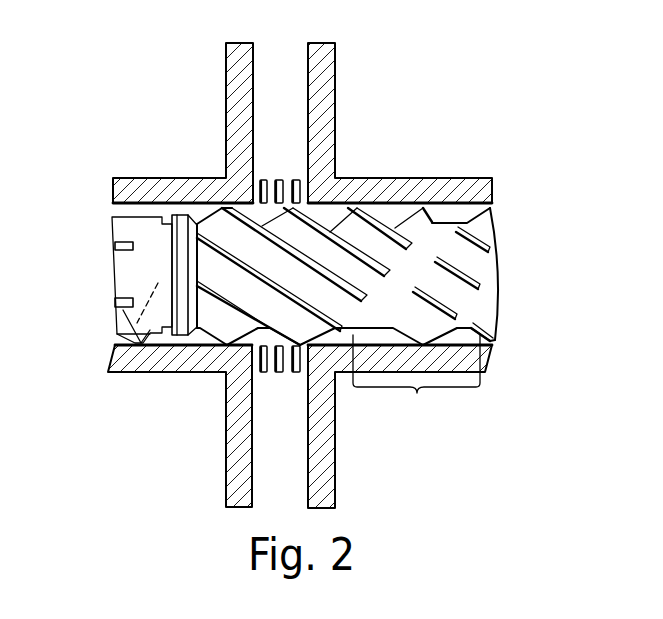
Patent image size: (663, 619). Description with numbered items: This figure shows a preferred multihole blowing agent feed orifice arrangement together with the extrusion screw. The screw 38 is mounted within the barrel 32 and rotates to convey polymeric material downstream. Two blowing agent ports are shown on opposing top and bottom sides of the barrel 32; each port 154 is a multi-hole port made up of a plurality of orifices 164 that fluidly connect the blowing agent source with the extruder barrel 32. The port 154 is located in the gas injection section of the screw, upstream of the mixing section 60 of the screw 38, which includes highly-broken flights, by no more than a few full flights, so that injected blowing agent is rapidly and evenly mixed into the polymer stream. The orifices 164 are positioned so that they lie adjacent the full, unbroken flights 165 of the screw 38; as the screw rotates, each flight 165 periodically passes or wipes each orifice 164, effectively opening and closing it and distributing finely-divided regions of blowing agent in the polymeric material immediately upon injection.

The barrel 32 is at (141, 363).
The screw 38 is at (218, 222).
The mixing section 60 is at (416, 378).
The port 154 is at (277, 386).
The orifices 164 is at (297, 176).
The full, unbroken flights 165 is at (347, 237).